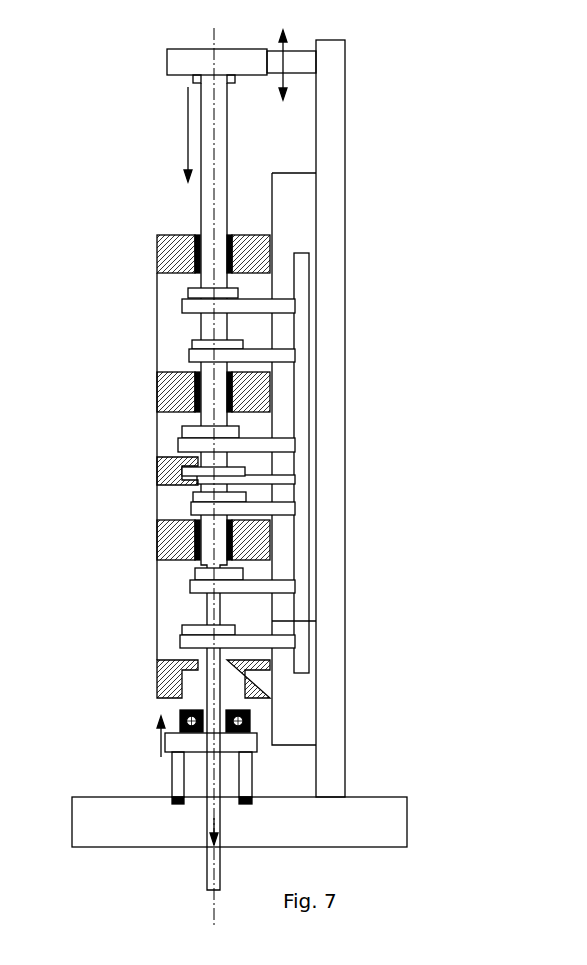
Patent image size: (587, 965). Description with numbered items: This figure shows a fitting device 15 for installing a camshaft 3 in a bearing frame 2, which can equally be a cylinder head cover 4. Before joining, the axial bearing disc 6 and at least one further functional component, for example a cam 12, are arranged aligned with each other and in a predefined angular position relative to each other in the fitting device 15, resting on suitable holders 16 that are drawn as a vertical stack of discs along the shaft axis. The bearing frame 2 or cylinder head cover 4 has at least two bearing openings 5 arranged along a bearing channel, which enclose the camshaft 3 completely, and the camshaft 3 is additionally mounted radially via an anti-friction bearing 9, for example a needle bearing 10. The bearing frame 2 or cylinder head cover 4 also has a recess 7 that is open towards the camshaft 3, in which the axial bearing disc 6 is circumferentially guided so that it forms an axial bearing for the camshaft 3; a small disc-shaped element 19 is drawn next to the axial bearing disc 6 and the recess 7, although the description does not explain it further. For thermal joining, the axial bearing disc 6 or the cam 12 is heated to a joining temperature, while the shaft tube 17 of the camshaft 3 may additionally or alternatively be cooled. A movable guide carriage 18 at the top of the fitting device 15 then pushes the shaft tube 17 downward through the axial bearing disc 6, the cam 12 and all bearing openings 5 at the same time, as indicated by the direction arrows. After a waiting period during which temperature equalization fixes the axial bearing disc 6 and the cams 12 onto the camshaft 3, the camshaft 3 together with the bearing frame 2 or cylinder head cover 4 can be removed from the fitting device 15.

The fitting device 15 is at (428, 134).
The movable guide carriage 18 is at (168, 60).
The camshaft 3 is at (205, 153).
The shaft tube 17 is at (146, 486).
The bearing opening 5 is at (198, 235).
The anti-friction bearing 9 is at (170, 372).
The needle bearing 10 is at (234, 377).
The bearing frame 2 is at (165, 543).
The cylinder head cover 4 is at (180, 542).
The cam 12 is at (190, 291).
The holder 16 is at (284, 303).
The axial bearing disc 6 is at (177, 460).
The recess 7 is at (180, 462).
The spacer disc 19 is at (182, 470).